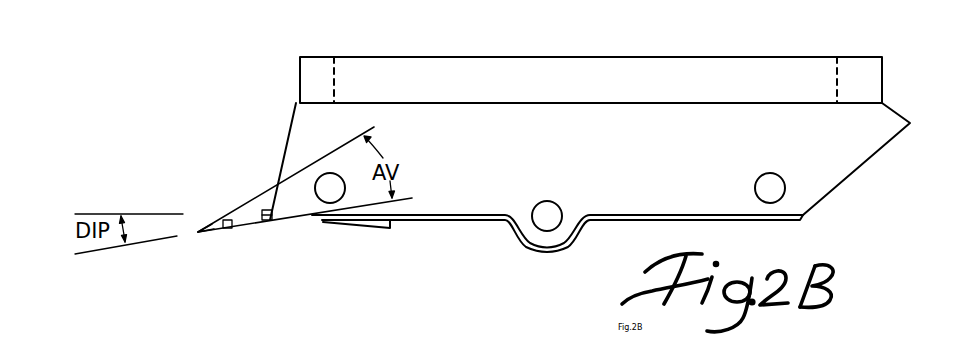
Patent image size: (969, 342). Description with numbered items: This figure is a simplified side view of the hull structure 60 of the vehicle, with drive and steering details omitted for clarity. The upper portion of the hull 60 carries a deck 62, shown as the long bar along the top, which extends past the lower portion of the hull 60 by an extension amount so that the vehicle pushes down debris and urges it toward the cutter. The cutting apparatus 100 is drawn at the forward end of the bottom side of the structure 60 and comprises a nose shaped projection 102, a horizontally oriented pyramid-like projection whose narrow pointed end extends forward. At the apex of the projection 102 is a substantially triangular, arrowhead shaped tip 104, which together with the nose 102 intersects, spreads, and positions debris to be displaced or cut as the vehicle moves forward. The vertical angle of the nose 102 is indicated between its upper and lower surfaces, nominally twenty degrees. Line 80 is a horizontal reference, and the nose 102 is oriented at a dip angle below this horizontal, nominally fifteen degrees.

The hull structure 60 is at (674, 47).
The deck 62 is at (298, 70).
The horizontal reference line 80 is at (97, 213).
The cutting apparatus 100 is at (250, 197).
The nose shaped projection 102 is at (252, 231).
The tip 104 is at (201, 238).